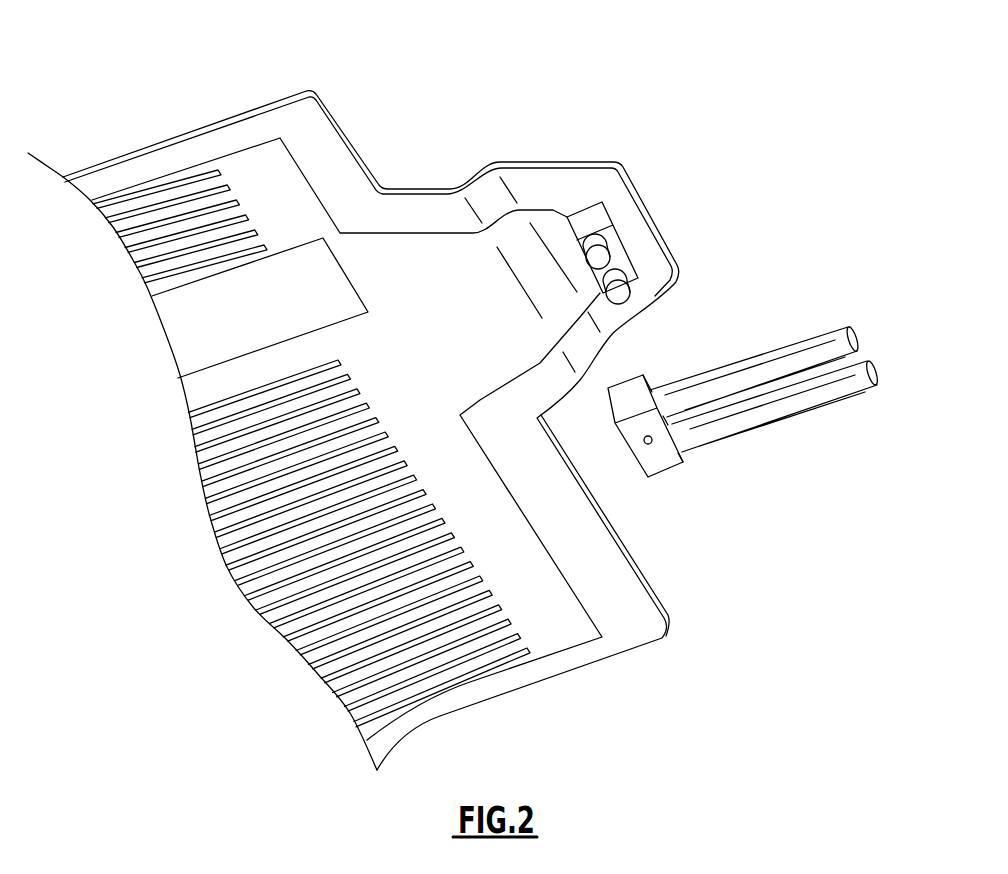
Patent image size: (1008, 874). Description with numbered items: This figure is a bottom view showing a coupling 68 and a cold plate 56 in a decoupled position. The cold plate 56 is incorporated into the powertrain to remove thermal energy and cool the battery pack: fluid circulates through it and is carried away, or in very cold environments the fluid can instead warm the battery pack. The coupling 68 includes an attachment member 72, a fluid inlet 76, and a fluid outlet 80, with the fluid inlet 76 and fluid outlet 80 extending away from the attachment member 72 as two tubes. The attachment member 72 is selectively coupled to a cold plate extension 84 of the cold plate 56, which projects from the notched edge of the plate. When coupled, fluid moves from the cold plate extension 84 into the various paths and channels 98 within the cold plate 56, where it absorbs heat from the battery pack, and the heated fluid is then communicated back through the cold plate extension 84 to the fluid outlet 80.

The cold plate 56 is at (540, 88).
The channels 98 is at (290, 531).
The cold plate extension 84 is at (600, 222).
The coupling 68 is at (752, 399).
The attachment member 72 is at (663, 458).
The fluid outlet 80 is at (728, 377).
The fluid inlet 76 is at (827, 398).